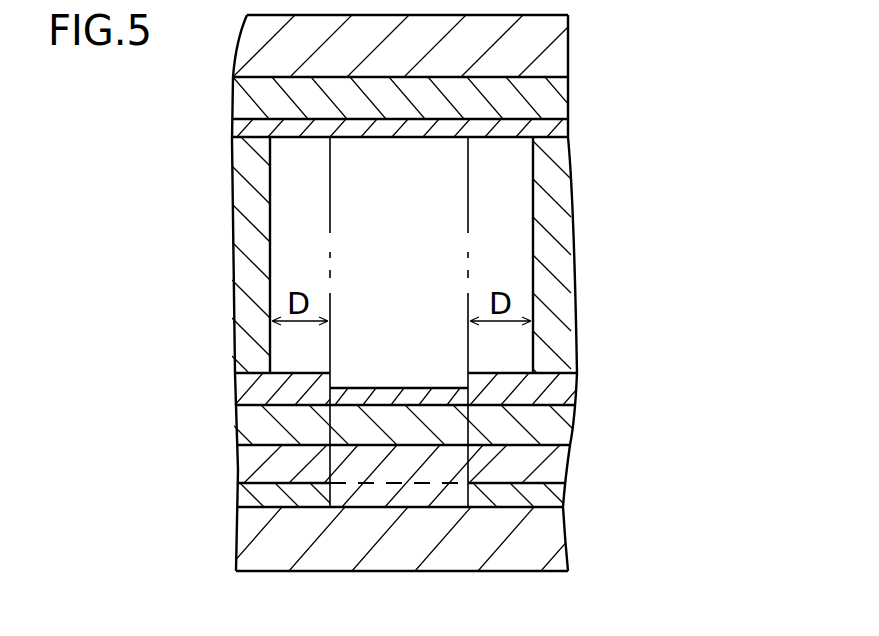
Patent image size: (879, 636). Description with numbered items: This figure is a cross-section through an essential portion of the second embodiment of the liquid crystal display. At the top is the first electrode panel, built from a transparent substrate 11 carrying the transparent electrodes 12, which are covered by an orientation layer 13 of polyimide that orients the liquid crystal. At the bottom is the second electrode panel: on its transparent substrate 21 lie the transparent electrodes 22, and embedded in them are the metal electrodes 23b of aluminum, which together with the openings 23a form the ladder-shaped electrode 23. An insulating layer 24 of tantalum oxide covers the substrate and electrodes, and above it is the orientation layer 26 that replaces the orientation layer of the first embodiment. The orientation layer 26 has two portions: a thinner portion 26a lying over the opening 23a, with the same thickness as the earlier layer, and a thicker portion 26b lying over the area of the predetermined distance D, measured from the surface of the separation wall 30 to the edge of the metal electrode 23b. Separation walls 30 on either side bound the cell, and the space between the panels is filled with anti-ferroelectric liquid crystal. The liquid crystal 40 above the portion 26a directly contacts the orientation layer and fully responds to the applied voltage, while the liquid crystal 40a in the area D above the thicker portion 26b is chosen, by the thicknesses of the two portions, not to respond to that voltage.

The transparent substrate 11 is at (550, 45).
The transparent electrodes 12 is at (552, 97).
The orientation layer 13 is at (552, 128).
The transparent substrate 21 is at (537, 540).
The transparent electrodes 22 is at (247, 463).
The ladder-shaped electrode 23 is at (565, 493).
The opening 23a is at (334, 487).
The metal electrodes 23b is at (508, 497).
The insulating layer 24 is at (552, 428).
The orientation layer 26 is at (578, 390).
The portion of orientation layer 26a is at (412, 397).
The portion of orientation layer 26b is at (548, 385).
The separation wall 30 is at (245, 225).
The liquid crystal 40 is at (440, 277).
The liquid crystal 40a is at (295, 190).